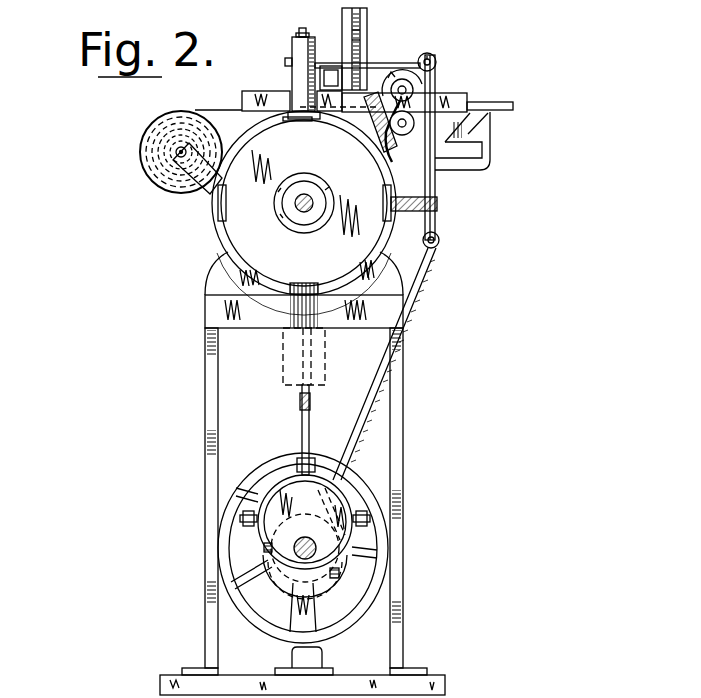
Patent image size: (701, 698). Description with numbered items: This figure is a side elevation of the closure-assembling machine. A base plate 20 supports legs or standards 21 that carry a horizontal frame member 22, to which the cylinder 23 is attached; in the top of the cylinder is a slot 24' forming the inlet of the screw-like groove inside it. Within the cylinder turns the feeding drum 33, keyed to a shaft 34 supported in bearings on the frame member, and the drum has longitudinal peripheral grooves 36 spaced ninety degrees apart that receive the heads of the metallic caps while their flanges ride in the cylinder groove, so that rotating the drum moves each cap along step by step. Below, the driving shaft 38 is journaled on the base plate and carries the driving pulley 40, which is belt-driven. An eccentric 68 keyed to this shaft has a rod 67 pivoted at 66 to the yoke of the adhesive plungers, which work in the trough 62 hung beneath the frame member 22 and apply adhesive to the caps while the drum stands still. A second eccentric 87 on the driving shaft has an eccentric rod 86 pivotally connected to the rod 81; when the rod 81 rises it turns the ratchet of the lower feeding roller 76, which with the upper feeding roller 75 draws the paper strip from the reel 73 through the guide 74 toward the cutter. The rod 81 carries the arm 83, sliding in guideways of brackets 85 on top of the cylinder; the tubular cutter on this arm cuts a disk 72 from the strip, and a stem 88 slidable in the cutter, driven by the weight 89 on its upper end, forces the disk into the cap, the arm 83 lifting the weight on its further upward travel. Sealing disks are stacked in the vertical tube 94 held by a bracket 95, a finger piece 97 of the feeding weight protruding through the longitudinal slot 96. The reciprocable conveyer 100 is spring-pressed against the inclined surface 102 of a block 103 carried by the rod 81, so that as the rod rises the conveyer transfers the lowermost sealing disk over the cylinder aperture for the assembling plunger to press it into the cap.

The base plate 20 is at (445, 686).
The legs or standards 21 is at (205, 434).
The horizontal frame member 22 is at (205, 311).
The cylinder 23 is at (223, 236).
The slot 24' is at (296, 140).
The feeding drum 33 is at (240, 247).
The shaft 34 is at (300, 213).
The longitudinal peripheral grooves 36 is at (312, 125).
The driving shaft 38 is at (300, 556).
The driving pulley 40 is at (373, 484).
The trough 62 is at (283, 362).
The pivot 66 is at (300, 401).
The rod 67 is at (309, 420).
The eccentric 68 is at (290, 484).
The disk 72 is at (213, 109).
The reel 73 is at (142, 170).
The guide 74 is at (456, 98).
The feeding roller 75 is at (408, 84).
The feeding roller 76 is at (406, 136).
The rod 81 is at (436, 184).
The arm 83 is at (402, 64).
The brackets 85 is at (294, 52).
The eccentric rod 86 is at (378, 395).
The eccentric 87 is at (320, 570).
The stem 88 is at (305, 29).
The weight 89 is at (299, 33).
The vertical tube 94 is at (367, 16).
The bracket 95 is at (331, 70).
The longitudinal slot 96 is at (360, 30).
The finger piece 97 is at (360, 40).
The reciprocable conveyer 100 is at (490, 102).
The inclined surface 102 is at (470, 131).
The block 103 is at (478, 136).